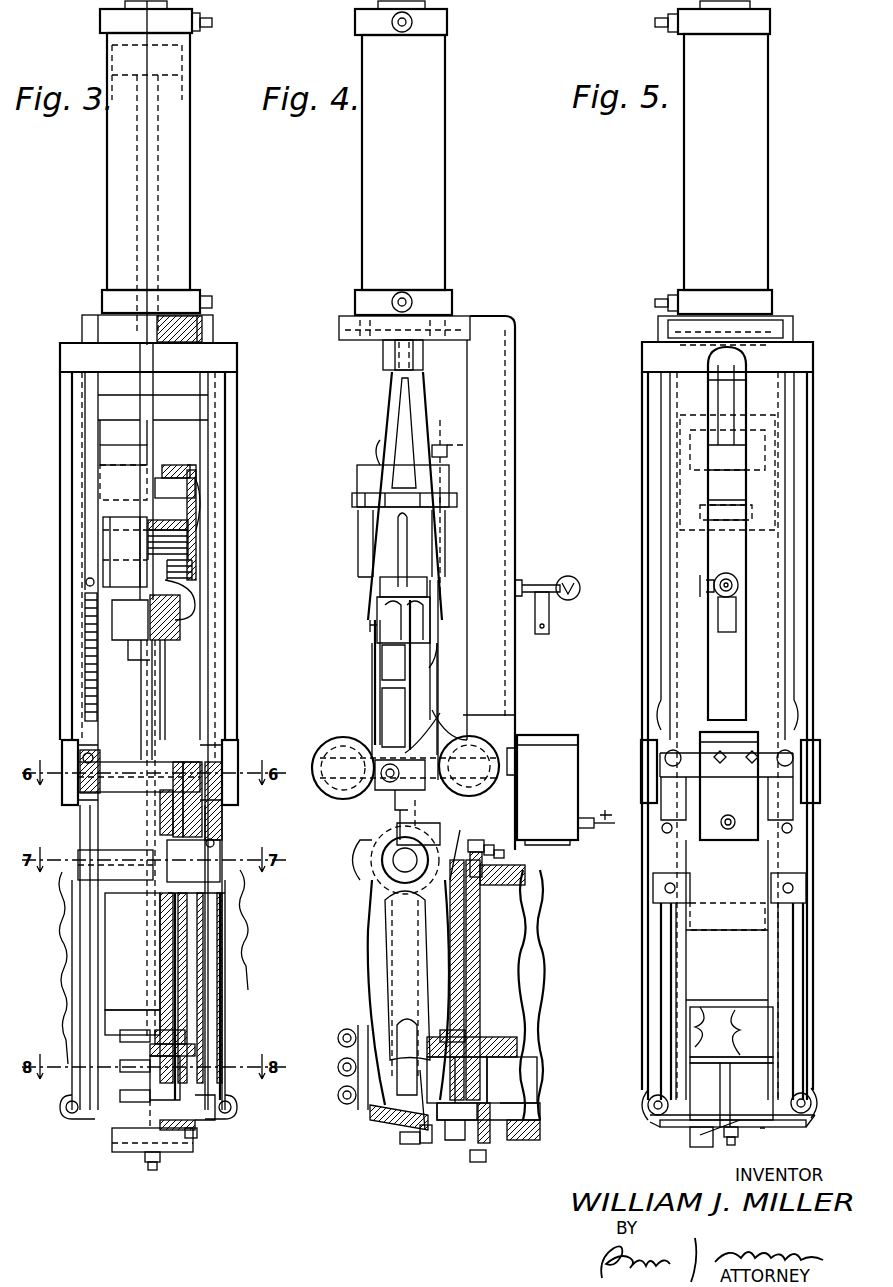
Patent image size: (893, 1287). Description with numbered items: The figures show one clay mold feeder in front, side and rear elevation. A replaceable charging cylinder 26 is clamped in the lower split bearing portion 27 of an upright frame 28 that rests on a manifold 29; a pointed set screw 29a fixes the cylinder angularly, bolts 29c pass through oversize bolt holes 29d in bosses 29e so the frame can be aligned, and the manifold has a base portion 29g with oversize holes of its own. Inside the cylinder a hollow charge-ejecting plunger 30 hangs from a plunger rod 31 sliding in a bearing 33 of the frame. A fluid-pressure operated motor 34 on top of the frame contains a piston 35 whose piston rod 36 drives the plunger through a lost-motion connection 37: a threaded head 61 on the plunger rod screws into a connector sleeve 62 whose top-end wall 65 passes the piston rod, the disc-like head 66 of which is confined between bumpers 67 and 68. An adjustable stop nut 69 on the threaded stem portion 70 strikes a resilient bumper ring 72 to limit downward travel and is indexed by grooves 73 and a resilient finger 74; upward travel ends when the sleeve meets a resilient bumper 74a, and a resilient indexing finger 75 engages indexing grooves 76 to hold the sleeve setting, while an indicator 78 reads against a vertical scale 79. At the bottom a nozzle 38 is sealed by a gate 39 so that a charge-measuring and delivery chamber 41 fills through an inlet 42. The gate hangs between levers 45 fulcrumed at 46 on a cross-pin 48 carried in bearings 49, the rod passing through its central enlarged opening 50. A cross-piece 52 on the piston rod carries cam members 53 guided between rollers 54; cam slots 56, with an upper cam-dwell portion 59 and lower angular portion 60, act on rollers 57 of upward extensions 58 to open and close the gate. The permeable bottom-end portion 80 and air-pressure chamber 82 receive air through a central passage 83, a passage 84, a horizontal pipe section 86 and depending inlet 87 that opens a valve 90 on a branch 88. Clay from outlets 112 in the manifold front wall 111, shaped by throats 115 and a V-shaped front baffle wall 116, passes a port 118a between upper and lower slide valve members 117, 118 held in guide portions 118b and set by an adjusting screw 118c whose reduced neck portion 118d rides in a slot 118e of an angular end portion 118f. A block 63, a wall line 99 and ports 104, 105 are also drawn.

In FIG. 3, the charging cylinder 26 is at (240, 1122).
In FIG. 4, the charging cylinder 26 is at (480, 1042).
In FIG. 3, the split bearing portion 27 is at (210, 1058).
In FIG. 4, the split bearing portion 27 is at (380, 1118).
In FIG. 3, the upright frame 28 is at (80, 492).
In FIG. 4, the upright frame 28 is at (515, 492).
In FIG. 5, the upright frame 28 is at (672, 492).
In FIG. 3, the manifold 29 is at (247, 944).
In FIG. 4, the manifold 29 is at (543, 922).
In FIG. 3, the pointed set screw 29a is at (308, 1046).
In FIG. 4, the pointed set screw 29a is at (358, 1045).
In FIG. 3, the bolts 29c is at (265, 1158).
In FIG. 5, the bolts 29c is at (660, 922).
In FIG. 5, the oversize bolt holes 29d is at (658, 958).
In FIG. 3, the bosses 29e is at (240, 1104).
In FIG. 4, the bosses 29e is at (355, 1082).
In FIG. 5, the bosses 29e is at (656, 900).
In FIG. 4, the base portion 29g is at (542, 1128).
In FIG. 5, the base portion 29g is at (614, 1106).
In FIG. 3, the charge-ejecting plunger 30 is at (190, 988).
In FIG. 4, the charge-ejecting plunger 30 is at (385, 1003).
In FIG. 3, the plunger rod 31 is at (166, 692).
In FIG. 4, the plunger rod 31 is at (392, 668).
In FIG. 3, the bearing 33 is at (165, 826).
In FIG. 3, the fluid-pressure operated motor 34 is at (191, 156).
In FIG. 4, the fluid-pressure operated motor 34 is at (448, 158).
In FIG. 5, the fluid-pressure operated motor 34 is at (771, 150).
In FIG. 3, the piston 35 is at (165, 64).
In FIG. 3, the piston rod 36 is at (155, 388).
In FIG. 4, the piston rod 36 is at (395, 352).
In FIG. 5, the piston rod 36 is at (726, 382).
In FIG. 3, the lost-motion connection 37 is at (195, 472).
In FIG. 4, the lost-motion connection 37 is at (359, 465).
In FIG. 5, the lost-motion connection 37 is at (715, 523).
In FIG. 3, the nozzle 38 is at (200, 1124).
In FIG. 4, the nozzle 38 is at (424, 1145).
In FIG. 3, the gate 39 is at (195, 1142).
In FIG. 4, the gate 39 is at (402, 1146).
In FIG. 5, the gate 39 is at (745, 1137).
In FIG. 3, the charge-measuring and delivery chamber 41 is at (166, 1092).
In FIG. 4, the charge-measuring and delivery chamber 41 is at (430, 1130).
In FIG. 4, the inlet 42 is at (510, 1058).
In FIG. 5, the inlet 42 is at (775, 1068).
In FIG. 3, the levers 45 is at (80, 983).
In FIG. 4, the levers 45 is at (370, 952).
In FIG. 5, the levers 45 is at (660, 946).
In FIG. 3, the fulcrum 46 is at (218, 846).
In FIG. 4, the fulcrum 46 is at (402, 860).
In FIG. 3, the cross-pin 48 is at (146, 910).
In FIG. 3, the bearings 49 is at (210, 832).
In FIG. 3, the central enlarged opening 50 is at (165, 878).
In FIG. 3, the cross-piece 52 is at (213, 355).
In FIG. 4, the cross-piece 52 is at (384, 374).
In FIG. 5, the cross-piece 52 is at (797, 367).
In FIG. 3, the cam members 53 is at (60, 426).
In FIG. 4, the cam members 53 is at (388, 422).
In FIG. 5, the cam members 53 is at (641, 458).
In FIG. 3, the rollers 54 is at (65, 750).
In FIG. 4, the rollers 54 is at (350, 742).
In FIG. 5, the rollers 54 is at (645, 748).
In FIG. 4, the cam slots 56 is at (440, 655).
In FIG. 3, the rollers 57 is at (222, 766).
In FIG. 4, the rollers 57 is at (393, 782).
In FIG. 3, the upward extensions 58 is at (78, 822).
In FIG. 4, the upward extensions 58 is at (396, 802).
In FIG. 5, the upward extensions 58 is at (665, 816).
In FIG. 4, the upper cam-dwell portion 59 is at (432, 684).
In FIG. 4, the lower angular portion 60 is at (430, 752).
In FIG. 3, the threaded head 61 is at (190, 546).
In FIG. 3, the connector sleeve 62 is at (197, 492).
In FIG. 4, the connector sleeve 62 is at (372, 492).
In FIG. 5, the connector sleeve 62 is at (720, 538).
In FIG. 3, the block 63 is at (165, 1012).
In FIG. 3, the top-end wall 65 is at (172, 466).
In FIG. 4, the top-end wall 65 is at (380, 460).
In FIG. 3, the disc-like head 66 is at (200, 502).
In FIG. 4, the disc-like head 66 is at (307, 489).
In FIG. 3, the bumper 67 is at (195, 480).
In FIG. 3, the bumper 68 is at (180, 526).
In FIG. 3, the adjustable stop nut 69 is at (169, 700).
In FIG. 4, the adjustable stop nut 69 is at (386, 652).
In FIG. 3, the threaded stem portion 70 is at (181, 607).
In FIG. 4, the threaded stem portion 70 is at (390, 592).
In FIG. 3, the resilient bumper ring 72 is at (176, 764).
In FIG. 3, the indexing grooves 73 is at (176, 628).
In FIG. 4, the indexing grooves 73 is at (392, 622).
In FIG. 4, the resilient finger 74 is at (398, 607).
In FIG. 3, the resilient bumper 74a is at (125, 450).
In FIG. 4, the resilient bumper 74a is at (447, 465).
In FIG. 5, the resilient bumper 74a is at (735, 457).
In FIG. 3, the resilient indexing finger 75 is at (193, 558).
In FIG. 4, the resilient indexing finger 75 is at (400, 552).
In FIG. 3, the indexing grooves 76 is at (110, 532).
In FIG. 4, the indexing grooves 76 is at (380, 524).
In FIG. 3, the indicator 78 is at (85, 614).
In FIG. 3, the vertical scale 79 is at (90, 655).
In FIG. 3, the bottom-end portion 80 is at (155, 1055).
In FIG. 3, the air-pressure chamber 82 is at (200, 1038).
In FIG. 3, the central passage 83 is at (160, 712).
In FIG. 3, the passage 84 is at (176, 592).
In FIG. 4, the horizontal pipe section 86 is at (480, 580).
In FIG. 5, the horizontal pipe section 86 is at (730, 580).
In FIG. 4, the depending inlet 87 is at (550, 608).
In FIG. 5, the depending inlet 87 is at (730, 614).
In FIG. 4, the branch 88 is at (596, 808).
In FIG. 5, the branch 88 is at (740, 808).
In FIG. 4, the valve 90 is at (546, 740).
In FIG. 5, the valve 90 is at (716, 740).
In FIG. 3, the cylinder wall 99 is at (107, 257).
In FIG. 4, the cylinder wall 99 is at (447, 206).
In FIG. 5, the cylinder wall 99 is at (769, 242).
In FIG. 3, the upper port 104 is at (204, 23).
In FIG. 4, the upper port 104 is at (413, 23).
In FIG. 5, the upper port 104 is at (660, 28).
In FIG. 3, the lower port 105 is at (210, 300).
In FIG. 4, the lower port 105 is at (405, 300).
In FIG. 5, the lower port 105 is at (660, 303).
In FIG. 3, the front wall 111 is at (230, 1008).
In FIG. 4, the front wall 111 is at (476, 978).
In FIG. 4, the outlets 112 is at (480, 1088).
In FIG. 4, the throats 115 is at (505, 1050).
In FIG. 5, the throats 115 is at (622, 1011).
In FIG. 4, the V-shaped front baffle wall 116 is at (505, 1037).
In FIG. 5, the V-shaped front baffle wall 116 is at (629, 996).
In FIG. 4, the upper slide valve member 117 is at (478, 960).
In FIG. 5, the upper slide valve member 117 is at (745, 972).
In FIG. 3, the lower slide valve member 118 is at (110, 1140).
In FIG. 4, the lower slide valve member 118 is at (452, 1140).
In FIG. 5, the lower slide valve member 118 is at (700, 1132).
In FIG. 4, the port 118a is at (482, 1075).
In FIG. 5, the port 118a is at (736, 1090).
In FIG. 4, the guide portions 118b is at (472, 922).
In FIG. 5, the guide portions 118b is at (736, 922).
In FIG. 3, the adjusting screw 118c is at (150, 1162).
In FIG. 4, the adjusting screw 118c is at (490, 850).
In FIG. 4, the reduced neck portion 118d is at (496, 860).
In FIG. 4, the slot 118e is at (504, 862).
In FIG. 5, the slot 118e is at (720, 865).
In FIG. 4, the angular end portion 118f is at (462, 1150).
In FIG. 5, the angular end portion 118f is at (760, 865).